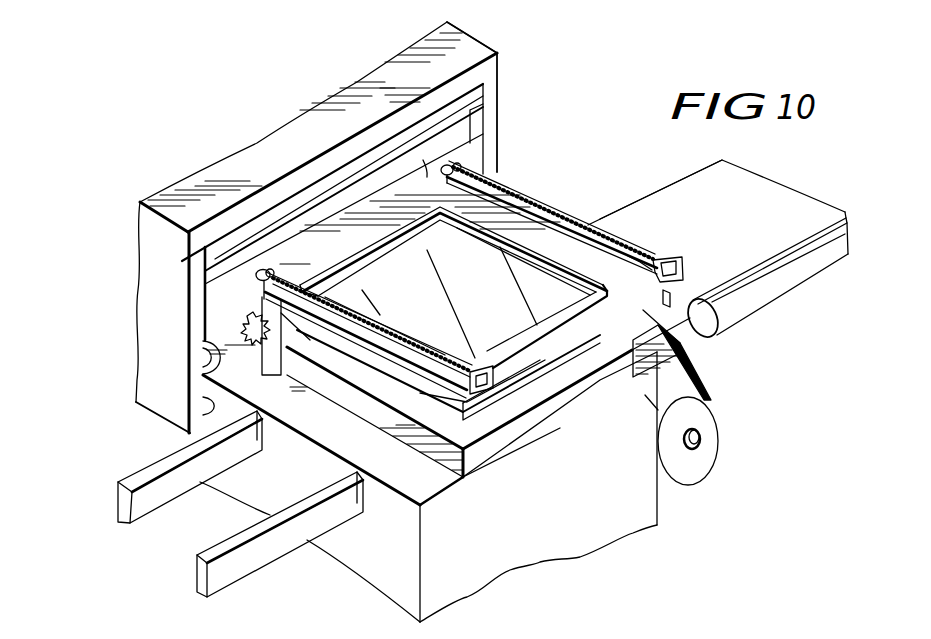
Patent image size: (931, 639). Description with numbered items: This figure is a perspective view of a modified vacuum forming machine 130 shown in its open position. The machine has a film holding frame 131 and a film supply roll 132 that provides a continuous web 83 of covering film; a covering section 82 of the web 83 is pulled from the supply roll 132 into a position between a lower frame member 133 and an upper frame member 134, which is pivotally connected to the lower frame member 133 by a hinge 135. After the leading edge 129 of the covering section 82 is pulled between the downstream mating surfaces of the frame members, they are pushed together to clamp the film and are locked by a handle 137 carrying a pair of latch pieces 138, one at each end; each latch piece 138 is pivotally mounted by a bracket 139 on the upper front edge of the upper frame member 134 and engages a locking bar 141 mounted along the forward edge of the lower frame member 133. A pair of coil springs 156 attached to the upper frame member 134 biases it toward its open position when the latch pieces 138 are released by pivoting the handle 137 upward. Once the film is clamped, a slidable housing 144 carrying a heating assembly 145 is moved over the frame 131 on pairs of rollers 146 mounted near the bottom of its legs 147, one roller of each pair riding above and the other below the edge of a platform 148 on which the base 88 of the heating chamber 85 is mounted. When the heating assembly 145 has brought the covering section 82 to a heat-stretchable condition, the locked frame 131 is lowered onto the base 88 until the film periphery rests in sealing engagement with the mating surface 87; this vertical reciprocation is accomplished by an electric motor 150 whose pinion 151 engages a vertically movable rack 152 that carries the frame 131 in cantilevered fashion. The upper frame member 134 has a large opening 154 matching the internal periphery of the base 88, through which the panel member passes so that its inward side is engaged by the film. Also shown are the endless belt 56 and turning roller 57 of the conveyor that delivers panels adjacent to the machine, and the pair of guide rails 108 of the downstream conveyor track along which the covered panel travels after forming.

The vacuum forming machine 130 is at (176, 150).
The slidable housing 144 is at (488, 72).
The legs 147 is at (488, 104).
The heating assembly 145 is at (327, 187).
The rollers 146 is at (204, 360).
The film holding frame 131 is at (542, 176).
The upper frame member 134 is at (483, 197).
The hinge 135 is at (260, 286).
The coil springs 156 is at (625, 190).
The latch pieces 138 is at (473, 367).
The bracket 139 is at (628, 261).
The rack 152 is at (277, 347).
The pinion 151 is at (247, 319).
The covering section 82 is at (498, 283).
The electric motor 150 is at (323, 288).
The leading edge 129 is at (453, 393).
The lower frame member 133 is at (377, 363).
The handle 137 is at (558, 342).
The locking bar 141 is at (527, 382).
The base 88 is at (488, 465).
The heating chamber 85 is at (358, 358).
The mating surface 87 is at (497, 425).
The platform 148 is at (403, 503).
The guide rails 108 is at (133, 497).
The film supply roll 132 is at (702, 433).
The continuous web 83 is at (708, 383).
The endless belt 56 is at (753, 210).
The opening 154 is at (614, 221).
The turning roller 57 is at (703, 318).